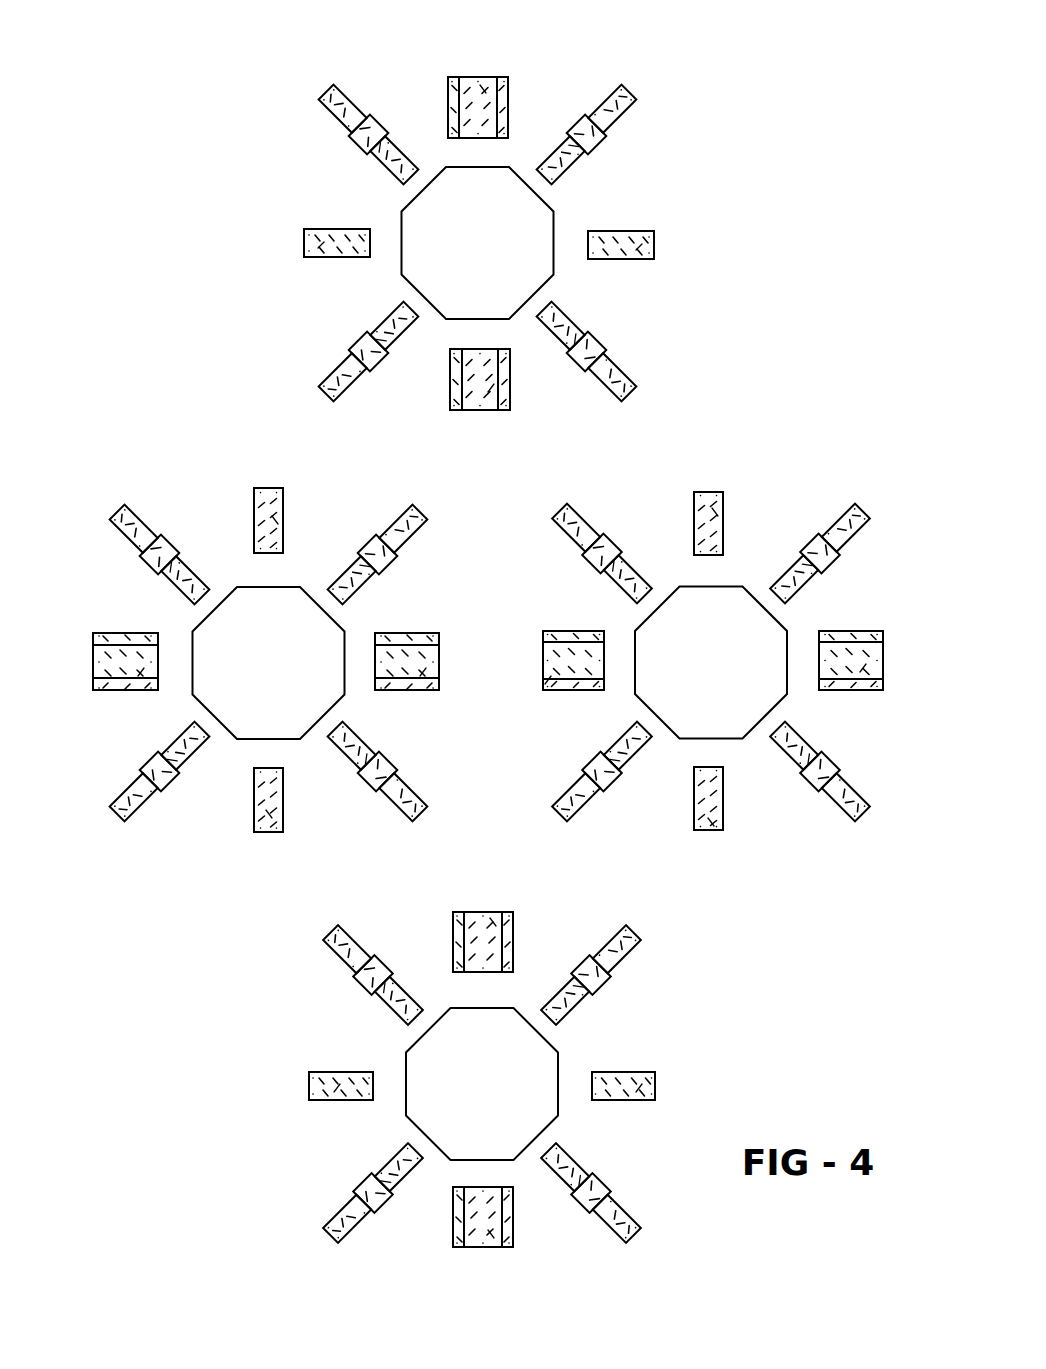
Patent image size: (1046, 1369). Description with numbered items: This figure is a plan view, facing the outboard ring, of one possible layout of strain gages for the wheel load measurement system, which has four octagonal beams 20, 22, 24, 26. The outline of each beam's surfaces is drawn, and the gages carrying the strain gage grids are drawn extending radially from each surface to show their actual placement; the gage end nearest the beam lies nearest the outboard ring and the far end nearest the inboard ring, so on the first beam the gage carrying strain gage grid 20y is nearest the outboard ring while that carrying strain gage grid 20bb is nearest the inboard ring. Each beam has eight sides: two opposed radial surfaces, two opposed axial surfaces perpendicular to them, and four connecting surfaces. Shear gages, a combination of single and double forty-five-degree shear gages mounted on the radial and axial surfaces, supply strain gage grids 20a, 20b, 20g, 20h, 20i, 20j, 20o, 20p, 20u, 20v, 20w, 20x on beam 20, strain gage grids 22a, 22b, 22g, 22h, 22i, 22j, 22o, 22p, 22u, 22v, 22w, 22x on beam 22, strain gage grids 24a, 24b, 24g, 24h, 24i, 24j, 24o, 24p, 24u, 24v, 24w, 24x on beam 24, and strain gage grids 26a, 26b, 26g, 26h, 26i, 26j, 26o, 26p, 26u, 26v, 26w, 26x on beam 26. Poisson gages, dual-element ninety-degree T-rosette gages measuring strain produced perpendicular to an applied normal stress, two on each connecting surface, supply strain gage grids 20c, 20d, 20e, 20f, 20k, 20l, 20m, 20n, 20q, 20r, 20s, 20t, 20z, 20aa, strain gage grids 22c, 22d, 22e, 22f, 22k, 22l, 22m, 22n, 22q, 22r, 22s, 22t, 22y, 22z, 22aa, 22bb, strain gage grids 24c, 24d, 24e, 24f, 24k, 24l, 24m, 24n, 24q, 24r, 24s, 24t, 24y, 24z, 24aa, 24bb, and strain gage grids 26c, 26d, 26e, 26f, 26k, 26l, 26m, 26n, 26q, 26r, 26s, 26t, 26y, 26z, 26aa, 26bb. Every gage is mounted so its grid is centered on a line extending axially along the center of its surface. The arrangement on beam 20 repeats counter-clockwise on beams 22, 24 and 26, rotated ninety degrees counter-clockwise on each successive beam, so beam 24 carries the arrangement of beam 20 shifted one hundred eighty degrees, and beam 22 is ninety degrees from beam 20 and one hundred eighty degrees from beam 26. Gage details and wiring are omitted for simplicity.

The octagonal beam 20 is at (700, 671).
The octagonal beam 22 is at (464, 246).
The octagonal beam 24 is at (256, 671).
The octagonal beam 26 is at (470, 1093).
The strain gage grid 20a is at (718, 512).
The strain gage grid 20b is at (702, 512).
The strain gage grid 20c is at (613, 597).
The strain gage grid 20d is at (618, 542).
The strain gage grid 20e is at (590, 550).
The strain gage grid 20f is at (577, 523).
The strain gage grid 20g is at (555, 632).
The strain gage grid 20h is at (550, 652).
The strain gage grid 20i is at (548, 687).
The strain gage grid 20j is at (573, 685).
The strain gage grid 20k is at (623, 740).
The strain gage grid 20l is at (627, 780).
The strain gage grid 20m is at (565, 768).
The strain gage grid 20n is at (587, 807).
The strain gage grid 20o is at (705, 823).
The strain gage grid 20p is at (717, 825).
The strain gage grid 20q is at (797, 740).
The strain gage grid 20r is at (798, 780).
The strain gage grid 20s is at (853, 772).
The strain gage grid 20t is at (840, 805).
The strain gage grid 20u is at (863, 692).
The strain gage grid 20v is at (850, 670).
The strain gage grid 20w is at (850, 652).
The strain gage grid 20x is at (862, 632).
The strain gage grid 20y is at (803, 590).
The strain gage grid 20z is at (802, 560).
The strain gage grid 20aa is at (837, 538).
The strain gage grid 20bb is at (842, 523).
The strain gage grid 22a is at (322, 230).
The strain gage grid 22b is at (322, 257).
The strain gage grid 22c is at (390, 325).
The strain gage grid 22d is at (387, 348).
The strain gage grid 22e is at (347, 370).
The strain gage grid 22f is at (347, 383).
The strain gage grid 22g is at (455, 402).
The strain gage grid 22h is at (470, 397).
The strain gage grid 22i is at (490, 397).
The strain gage grid 22j is at (510, 383).
The strain gage grid 22k is at (572, 320).
The strain gage grid 22l is at (583, 350).
The strain gage grid 22m is at (603, 365).
The strain gage grid 22n is at (608, 383).
The strain gage grid 22o is at (640, 258).
The strain gage grid 22p is at (640, 232).
The strain gage grid 22q is at (570, 173).
The strain gage grid 22r is at (570, 143).
The strain gage grid 22s is at (613, 123).
The strain gage grid 22t is at (608, 100).
The strain gage grid 22u is at (508, 95).
The strain gage grid 22v is at (483, 88).
The strain gage grid 22w is at (472, 82).
The strain gage grid 22x is at (447, 110).
The strain gage grid 22y is at (383, 173).
The strain gage grid 22z is at (380, 147).
The strain gage grid 22aa is at (357, 133).
The strain gage grid 22bb is at (345, 108).
The strain gage grid 24a is at (253, 815).
The strain gage grid 24b is at (283, 817).
The strain gage grid 24c is at (357, 742).
The strain gage grid 24d is at (358, 787).
The strain gage grid 24e is at (405, 773).
The strain gage grid 24f is at (392, 808).
The strain gage grid 24g is at (432, 693).
The strain gage grid 24h is at (422, 673).
The strain gage grid 24i is at (425, 652).
The strain gage grid 24j is at (430, 635).
The strain gage grid 24k is at (360, 593).
The strain gage grid 24l is at (357, 560).
The strain gage grid 24m is at (393, 542).
The strain gage grid 24n is at (400, 527).
The strain gage grid 24o is at (273, 520).
The strain gage grid 24p is at (262, 520).
The strain gage grid 24q is at (177, 590).
The strain gage grid 24r is at (180, 562).
The strain gage grid 24s is at (150, 555).
The strain gage grid 24t is at (125, 528).
The strain gage grid 24u is at (127, 635).
The strain gage grid 24v is at (143, 652).
The strain gage grid 24w is at (142, 673).
The strain gage grid 24x is at (117, 695).
The strain gage grid 24y is at (177, 742).
The strain gage grid 24z is at (182, 775).
The strain gage grid 24aa is at (128, 782).
The strain gage grid 24bb is at (138, 805).
The strain gage grid 26a is at (640, 1097).
The strain gage grid 26b is at (647, 1078).
The strain gage grid 26c is at (577, 1013).
The strain gage grid 26d is at (572, 985).
The strain gage grid 26e is at (613, 962).
The strain gage grid 26f is at (615, 940).
The strain gage grid 26g is at (513, 925).
The strain gage grid 26h is at (497, 925).
The strain gage grid 26i is at (473, 923).
The strain gage grid 26j is at (453, 927).
The strain gage grid 26k is at (388, 1013).
The strain gage grid 26l is at (388, 983).
The strain gage grid 26m is at (362, 980).
The strain gage grid 26n is at (350, 942).
The strain gage grid 26o is at (323, 1073).
The strain gage grid 26p is at (337, 1097).
The strain gage grid 26q is at (390, 1160).
The strain gage grid 26r is at (393, 1198).
The strain gage grid 26s is at (348, 1207).
The strain gage grid 26t is at (358, 1232).
The strain gage grid 26u is at (453, 1230).
The strain gage grid 26v is at (478, 1235).
The strain gage grid 26w is at (490, 1237).
The strain gage grid 26x is at (515, 1230).
The strain gage grid 26y is at (575, 1162).
The strain gage grid 26z is at (577, 1195).
The strain gage grid 26aa is at (613, 1198).
The strain gage grid 26bb is at (607, 1227).